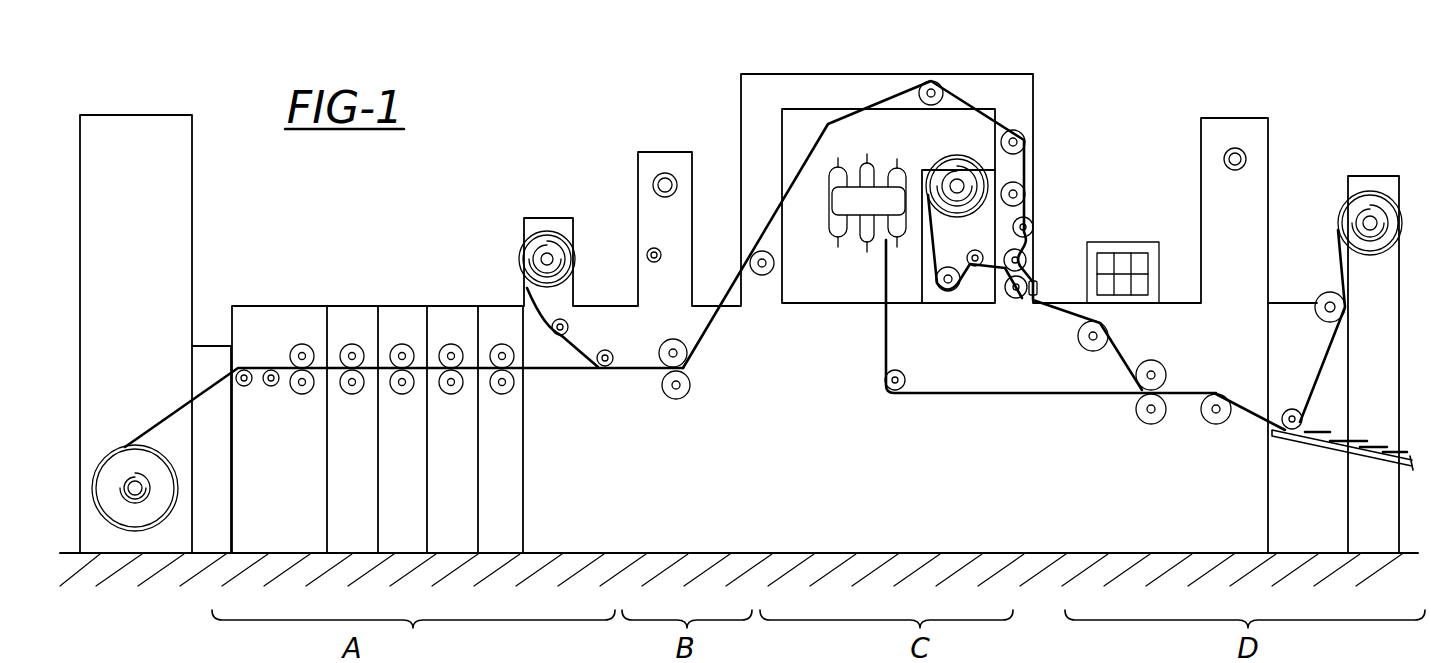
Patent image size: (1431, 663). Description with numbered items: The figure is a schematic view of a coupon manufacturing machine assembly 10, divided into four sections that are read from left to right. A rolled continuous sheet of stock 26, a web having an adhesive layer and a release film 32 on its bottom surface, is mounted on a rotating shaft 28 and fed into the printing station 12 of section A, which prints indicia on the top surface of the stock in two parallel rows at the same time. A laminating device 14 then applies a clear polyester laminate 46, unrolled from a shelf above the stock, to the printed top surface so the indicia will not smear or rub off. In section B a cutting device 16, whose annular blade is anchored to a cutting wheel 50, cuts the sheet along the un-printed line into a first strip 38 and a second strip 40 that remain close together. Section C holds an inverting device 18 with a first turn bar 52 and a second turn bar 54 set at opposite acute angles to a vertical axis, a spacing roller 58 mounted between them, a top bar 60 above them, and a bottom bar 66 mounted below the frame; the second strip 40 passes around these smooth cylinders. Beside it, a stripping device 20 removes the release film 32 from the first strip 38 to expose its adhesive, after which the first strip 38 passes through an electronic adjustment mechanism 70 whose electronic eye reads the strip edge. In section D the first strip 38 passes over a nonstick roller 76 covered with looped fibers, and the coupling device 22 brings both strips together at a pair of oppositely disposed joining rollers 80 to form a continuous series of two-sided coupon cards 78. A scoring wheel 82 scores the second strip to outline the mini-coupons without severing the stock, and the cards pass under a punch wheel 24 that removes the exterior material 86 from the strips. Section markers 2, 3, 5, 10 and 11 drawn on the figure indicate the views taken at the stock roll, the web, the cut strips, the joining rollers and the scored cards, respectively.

The section line 2- 2 is at (232, 422).
The view arrow 3 is at (531, 364).
The section line 5- 5 is at (732, 352).
The manufacturing machine assembly 10 is at (626, 146).
The view arrow 11 is at (1256, 420).
The printing station 12 is at (243, 286).
The laminating device 14 is at (570, 211).
The cutting device 16 is at (705, 402).
The inverting device 18 is at (830, 250).
The stripping device 20 is at (979, 144).
The coupling device 22 is at (1148, 447).
The punch wheel 24 is at (1292, 406).
The continuous sheet of stock 26 is at (133, 446).
The rotating shaft 28 is at (133, 500).
The release film 32 is at (960, 157).
The first strip 38 is at (893, 98).
The second strip 40 is at (863, 238).
The laminate 46 is at (582, 263).
The cutting wheel 50 is at (673, 372).
The first turn bar 52 is at (829, 172).
The second turn bar 54 is at (880, 243).
The spacing roller 58 is at (892, 162).
The top bar 60 is at (834, 158).
The bottom bar 66 is at (907, 384).
The electronic adjustment mechanism 70 is at (1042, 302).
The nonstick roller 76 is at (1096, 303).
The two-sided coupon cards 78 is at (1212, 392).
The joining rollers 80 is at (1136, 375).
The scoring wheel 82 is at (1226, 413).
The exterior material 86 is at (1370, 200).